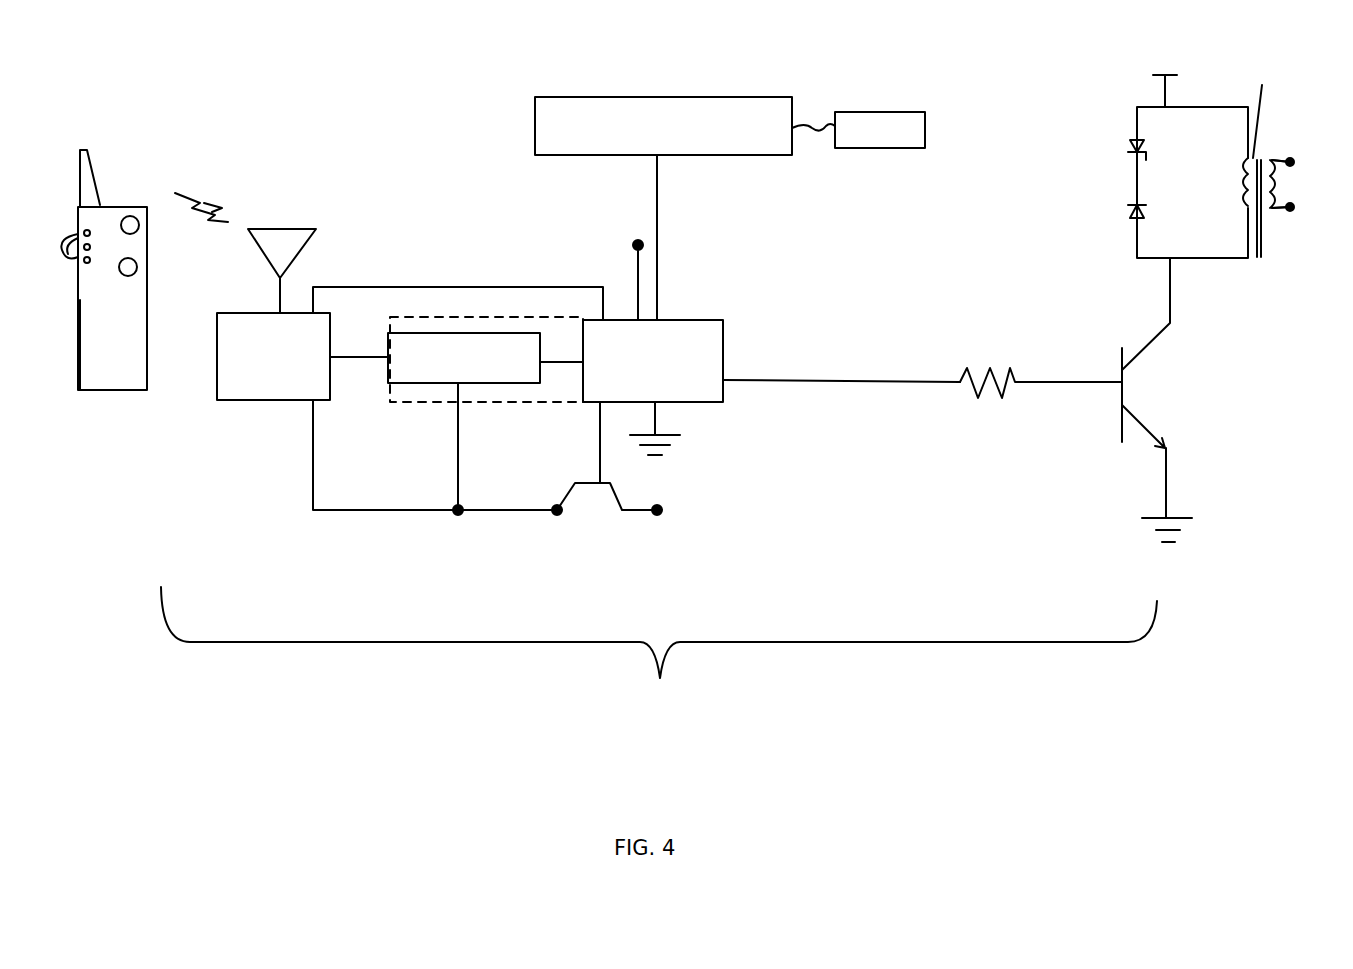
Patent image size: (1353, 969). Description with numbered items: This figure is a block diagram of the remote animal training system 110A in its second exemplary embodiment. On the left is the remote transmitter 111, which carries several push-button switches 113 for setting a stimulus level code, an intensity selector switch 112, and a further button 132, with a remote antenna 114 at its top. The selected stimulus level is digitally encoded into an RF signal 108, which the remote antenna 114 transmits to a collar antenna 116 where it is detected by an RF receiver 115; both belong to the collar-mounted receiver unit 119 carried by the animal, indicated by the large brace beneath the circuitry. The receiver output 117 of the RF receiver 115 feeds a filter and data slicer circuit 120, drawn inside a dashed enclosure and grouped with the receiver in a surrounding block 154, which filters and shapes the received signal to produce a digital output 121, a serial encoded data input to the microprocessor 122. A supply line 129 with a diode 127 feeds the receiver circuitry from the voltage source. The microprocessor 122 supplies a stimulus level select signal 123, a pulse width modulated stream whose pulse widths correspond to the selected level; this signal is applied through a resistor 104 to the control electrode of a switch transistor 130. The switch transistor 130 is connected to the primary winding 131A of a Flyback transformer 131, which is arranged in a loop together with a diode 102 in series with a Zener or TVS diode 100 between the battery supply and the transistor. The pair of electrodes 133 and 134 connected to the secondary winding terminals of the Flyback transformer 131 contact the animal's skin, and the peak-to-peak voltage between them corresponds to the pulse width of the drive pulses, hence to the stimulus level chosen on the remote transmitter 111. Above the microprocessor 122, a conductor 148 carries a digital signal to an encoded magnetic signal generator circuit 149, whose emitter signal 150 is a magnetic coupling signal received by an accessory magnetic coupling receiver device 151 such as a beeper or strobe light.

The diode 100 is at (1135, 155).
The diode 102 is at (1133, 218).
The resistor 104 is at (978, 362).
The RF signal 108 is at (211, 198).
The remote animal training system 110A is at (180, 385).
The remote transmitter 111 is at (75, 372).
The intensity selector switch 112 is at (140, 225).
The push-button switches 113 is at (60, 242).
The remote antenna 114 is at (90, 147).
The RF receiver 115 is at (255, 402).
The collar antenna 116 is at (312, 240).
The receiver output 117 is at (355, 358).
The collar-mounted receiver unit 119 is at (659, 650).
The filter and data slicer circuit 120 is at (415, 388).
The digital output 121 is at (560, 363).
The microprocessor 122 is at (688, 405).
The stimulus level select signal 123 is at (922, 385).
The diode 127 is at (595, 465).
The supply line 129 is at (503, 513).
The switch transistor 130 is at (1120, 438).
The Flyback transformer 131 is at (1215, 174).
The primary winding 131A is at (1265, 107).
The button 132 is at (138, 267).
The electrode 133 is at (1287, 148).
The electrode 134 is at (1285, 225).
The conductor 148 is at (655, 195).
The encoded magnetic signal generator circuit 149 is at (600, 97).
The emitter signal 150 is at (812, 120).
The accessory magnetic coupling receiver device 151 is at (885, 112).
The receiver module 154 is at (521, 287).